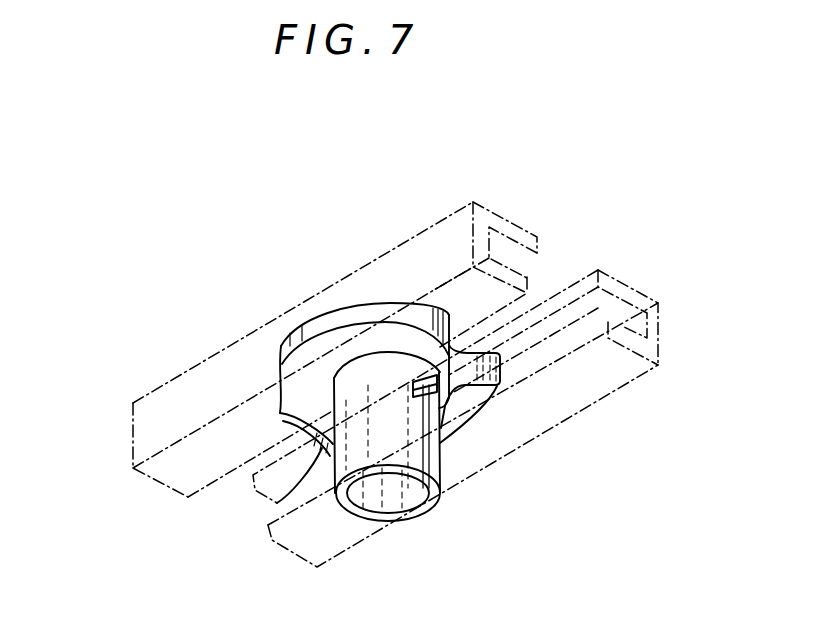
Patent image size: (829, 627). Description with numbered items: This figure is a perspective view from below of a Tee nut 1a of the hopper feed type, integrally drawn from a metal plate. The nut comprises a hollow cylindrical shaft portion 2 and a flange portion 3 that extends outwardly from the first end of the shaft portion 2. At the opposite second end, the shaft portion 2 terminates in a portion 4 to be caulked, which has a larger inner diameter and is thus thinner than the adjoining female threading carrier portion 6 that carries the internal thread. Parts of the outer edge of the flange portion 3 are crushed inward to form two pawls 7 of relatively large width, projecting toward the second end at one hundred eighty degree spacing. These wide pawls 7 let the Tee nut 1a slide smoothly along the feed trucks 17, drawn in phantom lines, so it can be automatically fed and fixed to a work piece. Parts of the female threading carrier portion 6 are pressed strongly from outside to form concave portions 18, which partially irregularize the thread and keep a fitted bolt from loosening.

The Tee nut 1a is at (268, 262).
The shaft portion 2 is at (449, 457).
The flange portion 3 is at (340, 318).
The portion to be caulked 4 is at (443, 480).
The female threading carrier portion 6 is at (352, 386).
The pawls 7 is at (292, 503).
The feed trucks 17 is at (527, 226).
The concave portions 18 is at (440, 385).